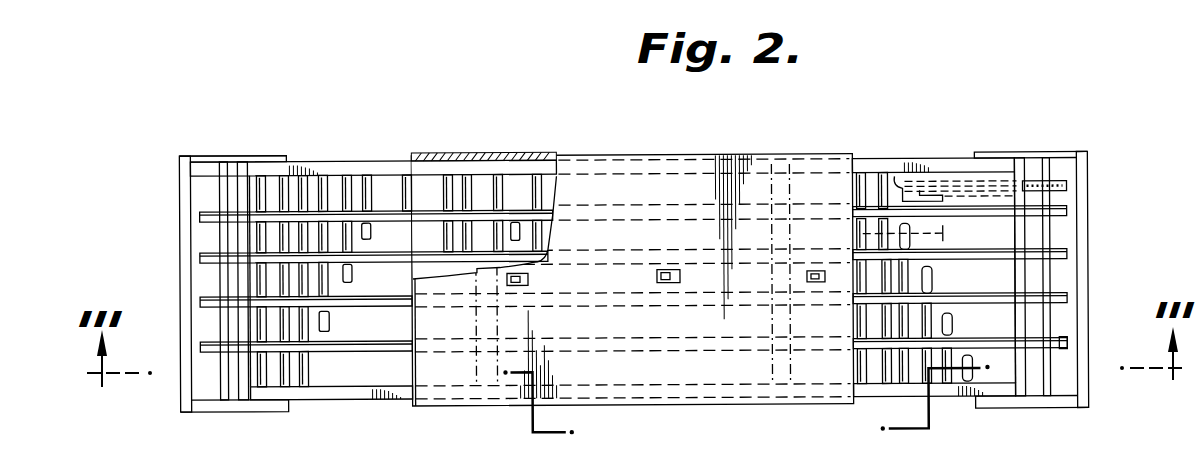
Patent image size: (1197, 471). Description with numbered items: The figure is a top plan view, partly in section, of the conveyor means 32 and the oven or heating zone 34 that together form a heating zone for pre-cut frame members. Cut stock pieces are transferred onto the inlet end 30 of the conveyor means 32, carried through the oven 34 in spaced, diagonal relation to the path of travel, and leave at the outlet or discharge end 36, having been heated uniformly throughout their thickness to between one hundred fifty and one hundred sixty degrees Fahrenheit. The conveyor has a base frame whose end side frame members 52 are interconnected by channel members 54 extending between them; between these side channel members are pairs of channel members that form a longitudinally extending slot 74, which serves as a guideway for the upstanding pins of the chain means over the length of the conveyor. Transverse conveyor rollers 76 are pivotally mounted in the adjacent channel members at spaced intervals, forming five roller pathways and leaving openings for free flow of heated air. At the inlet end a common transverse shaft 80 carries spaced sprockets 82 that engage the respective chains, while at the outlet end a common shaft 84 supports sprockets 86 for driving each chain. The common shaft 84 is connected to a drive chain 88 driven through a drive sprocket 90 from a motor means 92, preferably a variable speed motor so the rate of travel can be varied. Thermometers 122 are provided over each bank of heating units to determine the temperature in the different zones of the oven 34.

The inlet end 30 is at (268, 155).
The conveyor means 32 is at (400, 152).
The oven or heating zone 34 is at (672, 150).
The outlet or discharge end 36 is at (952, 162).
The end side frame member 52 is at (235, 156).
The channel member 54 is at (333, 162).
The longitudinally extending slot 74 is at (383, 340).
The conveyor roller 76 is at (352, 277).
The common transverse shaft 80 is at (230, 257).
The sprocket 82 is at (230, 213).
The common shaft 84 is at (1050, 276).
The sprocket 86 is at (1068, 188).
The drive chain 88 is at (992, 183).
The drive sprocket 90 is at (893, 170).
The motor means 92 is at (943, 227).
The thermometer 122 is at (667, 270).